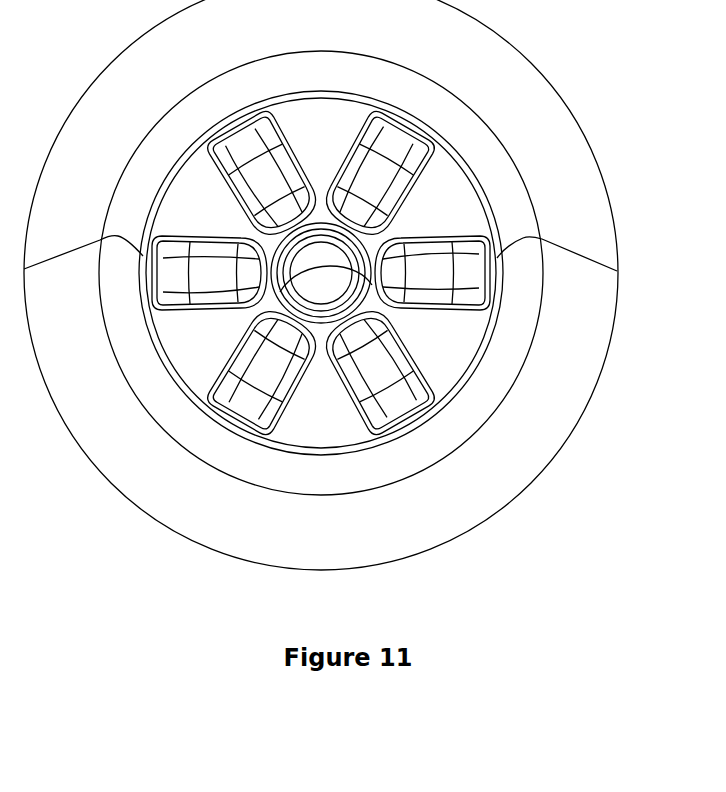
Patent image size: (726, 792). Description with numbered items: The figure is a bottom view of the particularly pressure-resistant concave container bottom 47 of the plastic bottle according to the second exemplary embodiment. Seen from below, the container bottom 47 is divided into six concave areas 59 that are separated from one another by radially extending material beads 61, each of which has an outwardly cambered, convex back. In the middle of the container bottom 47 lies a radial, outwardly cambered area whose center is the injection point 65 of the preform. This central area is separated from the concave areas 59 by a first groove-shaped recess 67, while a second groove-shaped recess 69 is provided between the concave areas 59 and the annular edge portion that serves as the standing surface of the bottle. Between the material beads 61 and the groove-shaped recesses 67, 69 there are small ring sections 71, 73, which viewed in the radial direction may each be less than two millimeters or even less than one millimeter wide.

The container bottom 47 is at (210, 231).
The concave areas 59 is at (322, 130).
The material beads 61 is at (368, 185).
The injection point 65 is at (319, 278).
The first groove-shaped recess 67 is at (443, 390).
The second groove-shaped recess 69 is at (502, 318).
The ring section 71 is at (317, 322).
The ring section 73 is at (405, 426).